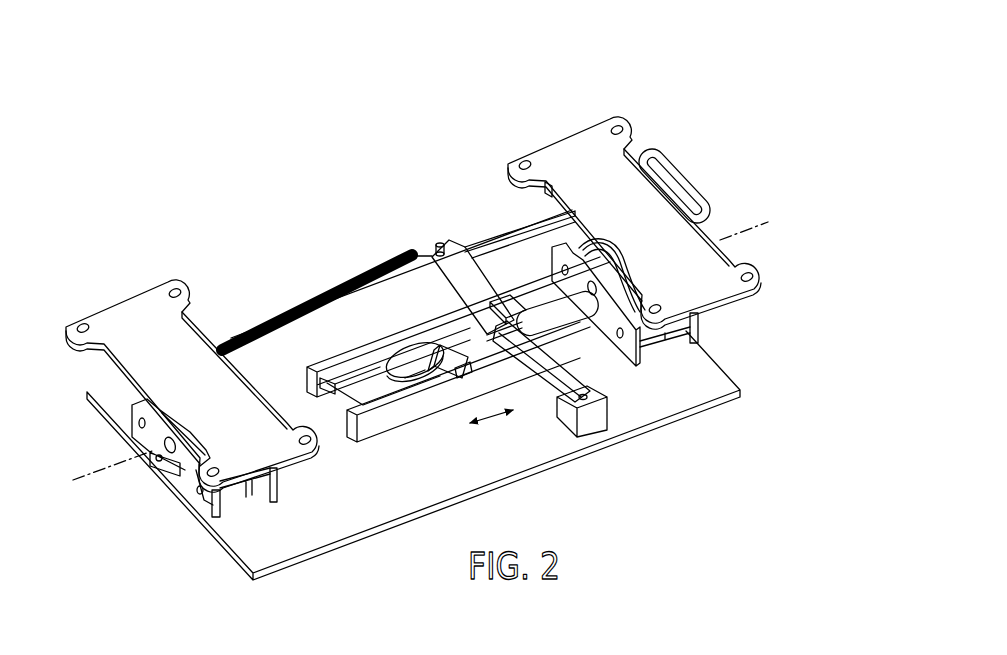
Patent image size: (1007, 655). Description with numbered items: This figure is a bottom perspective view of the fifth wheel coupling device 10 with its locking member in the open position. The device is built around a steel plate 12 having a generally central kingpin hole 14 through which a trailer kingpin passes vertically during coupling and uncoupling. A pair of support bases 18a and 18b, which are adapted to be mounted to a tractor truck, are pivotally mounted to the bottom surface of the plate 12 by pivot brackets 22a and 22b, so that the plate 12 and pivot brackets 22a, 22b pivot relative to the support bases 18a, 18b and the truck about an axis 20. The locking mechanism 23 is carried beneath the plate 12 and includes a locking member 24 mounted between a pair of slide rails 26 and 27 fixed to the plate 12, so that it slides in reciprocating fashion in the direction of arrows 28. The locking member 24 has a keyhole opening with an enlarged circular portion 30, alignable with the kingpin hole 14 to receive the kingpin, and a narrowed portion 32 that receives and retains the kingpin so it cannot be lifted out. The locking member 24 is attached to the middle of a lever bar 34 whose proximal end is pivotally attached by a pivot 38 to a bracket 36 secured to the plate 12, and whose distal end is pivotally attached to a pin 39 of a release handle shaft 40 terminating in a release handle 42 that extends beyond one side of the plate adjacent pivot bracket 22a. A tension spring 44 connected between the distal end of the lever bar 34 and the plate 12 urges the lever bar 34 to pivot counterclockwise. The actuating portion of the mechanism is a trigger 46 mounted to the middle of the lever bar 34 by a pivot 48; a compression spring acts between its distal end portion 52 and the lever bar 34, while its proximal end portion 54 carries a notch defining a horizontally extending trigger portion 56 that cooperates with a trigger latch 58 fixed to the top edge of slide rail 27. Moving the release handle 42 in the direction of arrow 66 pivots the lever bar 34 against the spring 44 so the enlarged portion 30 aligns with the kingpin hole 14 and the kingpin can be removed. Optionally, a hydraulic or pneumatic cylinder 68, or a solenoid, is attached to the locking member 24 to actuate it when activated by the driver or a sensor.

The fifth wheel coupling device 10 is at (400, 176).
The plate 12 is at (305, 533).
The kingpin hole 14 is at (327, 387).
The support base 18a is at (571, 150).
The support base 18b is at (132, 315).
The axis 20 is at (100, 470).
The pivot bracket 22a is at (135, 423).
The pivot bracket 22b is at (698, 326).
The locking mechanism 23 is at (470, 252).
The locking member 24 is at (363, 392).
The slide rail 26 is at (320, 363).
The slide rail 27 is at (368, 430).
The arrows 28 is at (493, 418).
The enlarged circular portion 30 is at (407, 356).
The narrowed portion 32 is at (507, 359).
The lever bar 34 is at (563, 380).
The bracket 36 is at (594, 428).
The pivot 38 is at (590, 397).
The pin 39 is at (439, 243).
The release handle shaft 40 is at (537, 228).
The release handle 42 is at (679, 165).
The tension spring 44 is at (316, 300).
The trigger 46 is at (473, 330).
The pivot 48 is at (543, 355).
The distal end portion 52 is at (507, 312).
The proximal end portion 54 is at (425, 366).
The trigger portion 56 is at (438, 364).
The trigger latch 58 is at (457, 373).
The arrow 66 is at (752, 156).
The hydraulic or pneumatic cylinder 68 is at (555, 323).